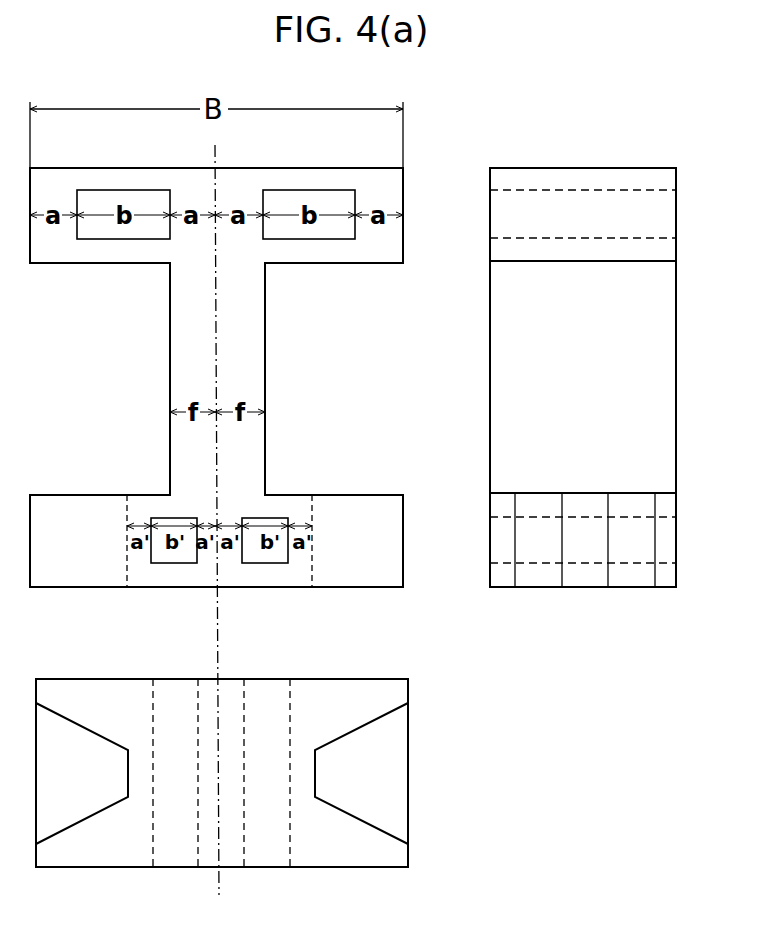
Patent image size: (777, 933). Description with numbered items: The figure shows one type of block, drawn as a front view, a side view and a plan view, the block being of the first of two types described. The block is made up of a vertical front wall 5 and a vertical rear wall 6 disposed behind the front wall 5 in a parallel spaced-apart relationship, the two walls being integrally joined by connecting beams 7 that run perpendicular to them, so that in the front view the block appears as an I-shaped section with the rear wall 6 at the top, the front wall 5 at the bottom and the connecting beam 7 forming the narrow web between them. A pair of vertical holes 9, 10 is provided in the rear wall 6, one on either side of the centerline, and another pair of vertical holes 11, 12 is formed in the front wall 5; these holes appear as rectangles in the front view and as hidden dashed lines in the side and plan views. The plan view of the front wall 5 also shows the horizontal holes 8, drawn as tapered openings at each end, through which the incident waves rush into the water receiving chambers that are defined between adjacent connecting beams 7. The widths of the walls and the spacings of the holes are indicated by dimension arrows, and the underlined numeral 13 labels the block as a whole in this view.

The vertical front wall 5 is at (377, 578).
The vertical rear wall 6 is at (248, 178).
The connecting beam 7 is at (258, 345).
The horizontal hole 8 is at (395, 780).
The vertical hole 9 is at (108, 198).
The vertical hole 10 is at (337, 198).
The vertical hole 11 is at (167, 557).
The vertical hole 12 is at (267, 557).
The I-shaped core 13 is at (349, 391).